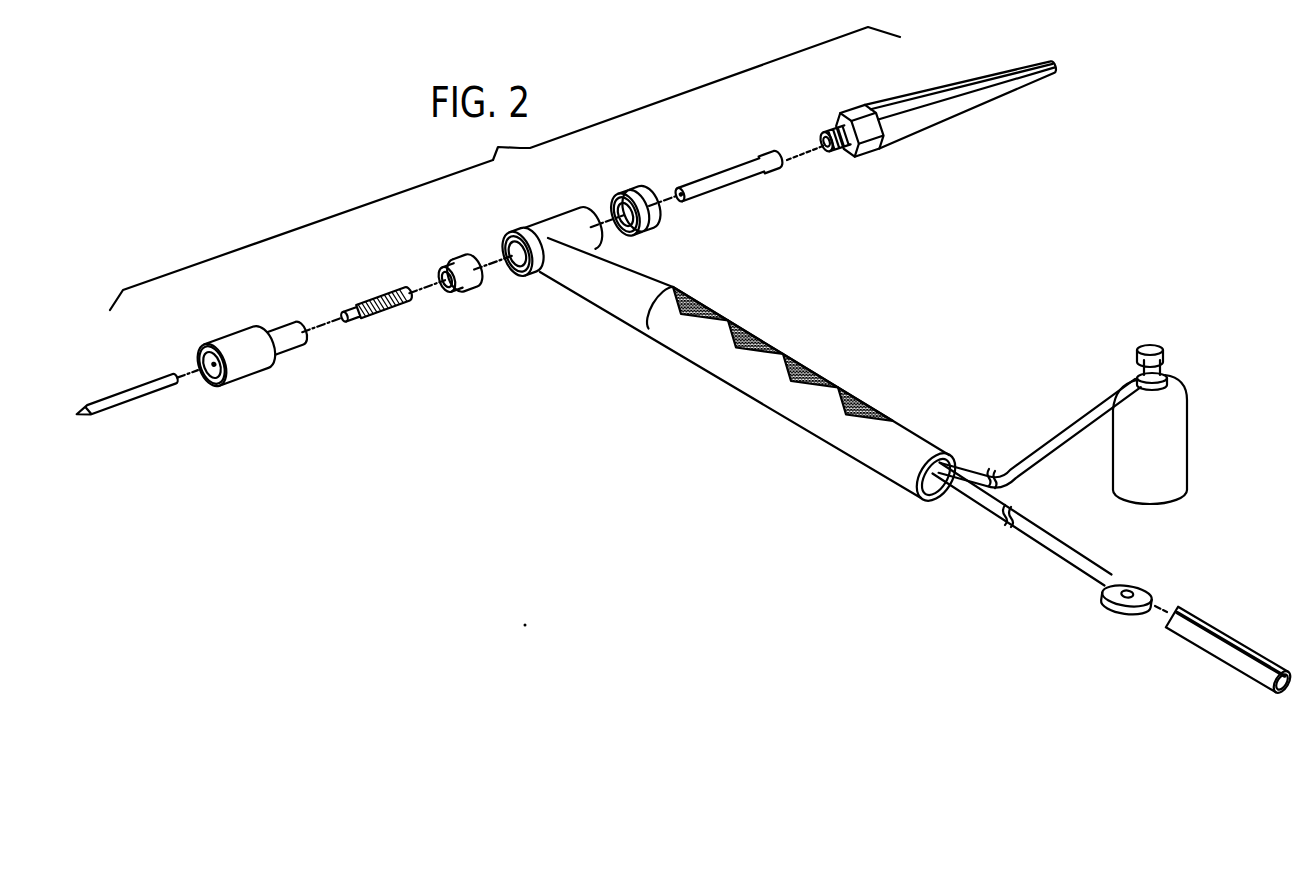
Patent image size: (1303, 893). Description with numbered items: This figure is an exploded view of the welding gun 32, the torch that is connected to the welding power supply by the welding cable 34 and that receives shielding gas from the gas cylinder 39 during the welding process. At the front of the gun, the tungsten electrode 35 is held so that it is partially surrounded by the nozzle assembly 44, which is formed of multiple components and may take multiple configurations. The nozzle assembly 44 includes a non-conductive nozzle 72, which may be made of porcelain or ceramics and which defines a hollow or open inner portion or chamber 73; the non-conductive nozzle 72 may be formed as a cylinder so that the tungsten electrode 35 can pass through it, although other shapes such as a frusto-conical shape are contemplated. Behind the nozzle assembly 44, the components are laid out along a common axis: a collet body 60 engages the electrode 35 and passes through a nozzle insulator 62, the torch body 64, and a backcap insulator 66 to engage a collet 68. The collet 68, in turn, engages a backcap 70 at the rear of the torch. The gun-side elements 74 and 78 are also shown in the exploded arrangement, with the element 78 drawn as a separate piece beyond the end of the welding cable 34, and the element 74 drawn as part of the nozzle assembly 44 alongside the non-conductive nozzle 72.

The welding gun 32 is at (992, 285).
The welding cable 34 is at (1056, 542).
The tungsten electrode 35 is at (128, 403).
The gas cylinder 39 is at (1178, 455).
The nozzle assembly 44 is at (246, 381).
The collet body 60 is at (375, 298).
The nozzle insulator 62 is at (460, 250).
The torch body 64 is at (545, 212).
The backcap insulator 66 is at (635, 192).
The collet 68 is at (722, 180).
The backcap 70 is at (883, 107).
The non-conductive nozzle 72 is at (210, 388).
The inner chamber 73 is at (204, 360).
The hub body 74 is at (236, 338).
The sleeve tube 78 is at (1240, 643).